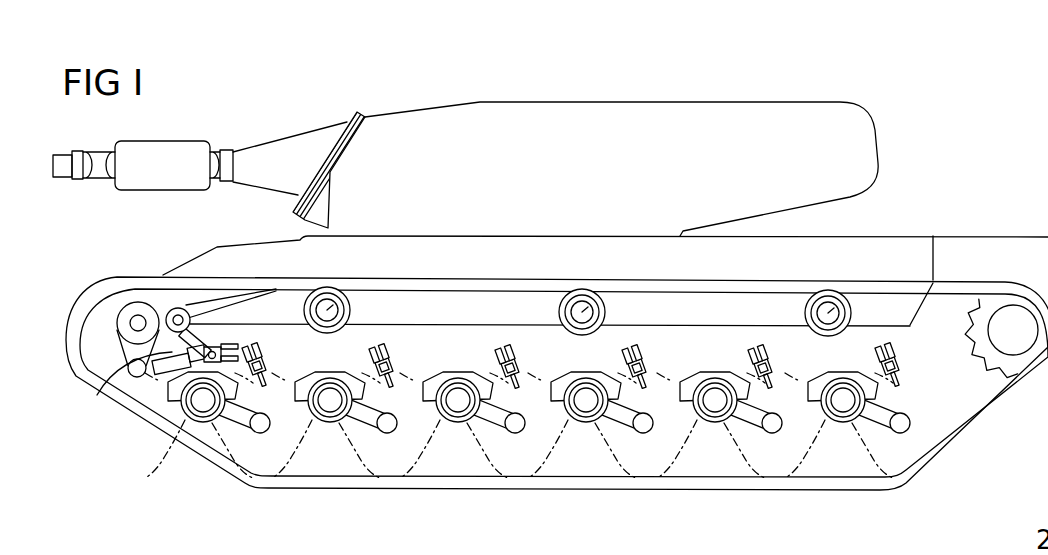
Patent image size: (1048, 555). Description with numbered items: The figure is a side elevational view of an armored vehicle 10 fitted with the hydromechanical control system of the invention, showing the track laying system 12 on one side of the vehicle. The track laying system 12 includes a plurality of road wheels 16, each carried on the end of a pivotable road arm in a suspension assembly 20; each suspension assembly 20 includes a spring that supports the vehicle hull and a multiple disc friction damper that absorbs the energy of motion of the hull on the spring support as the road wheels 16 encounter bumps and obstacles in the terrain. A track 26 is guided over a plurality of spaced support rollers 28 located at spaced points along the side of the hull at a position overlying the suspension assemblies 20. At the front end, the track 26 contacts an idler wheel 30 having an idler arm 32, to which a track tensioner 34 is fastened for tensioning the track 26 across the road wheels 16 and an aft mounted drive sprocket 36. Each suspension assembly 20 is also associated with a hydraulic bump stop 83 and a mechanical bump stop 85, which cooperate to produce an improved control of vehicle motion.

The armored vehicle 10 is at (465, 152).
The right hand track laying system 12 is at (557, 395).
The road wheel 16 is at (250, 492).
The suspension assembly 20 is at (731, 370).
The track 26 is at (135, 418).
The support roller 28 is at (341, 297).
The idler wheel 30 is at (104, 306).
The idler arm 32 is at (100, 398).
The track tensioner 34 is at (186, 310).
The drive sprocket 36 is at (994, 300).
The hydraulic bump stop 83 is at (609, 312).
The mechanical bump stop 85 is at (618, 318).